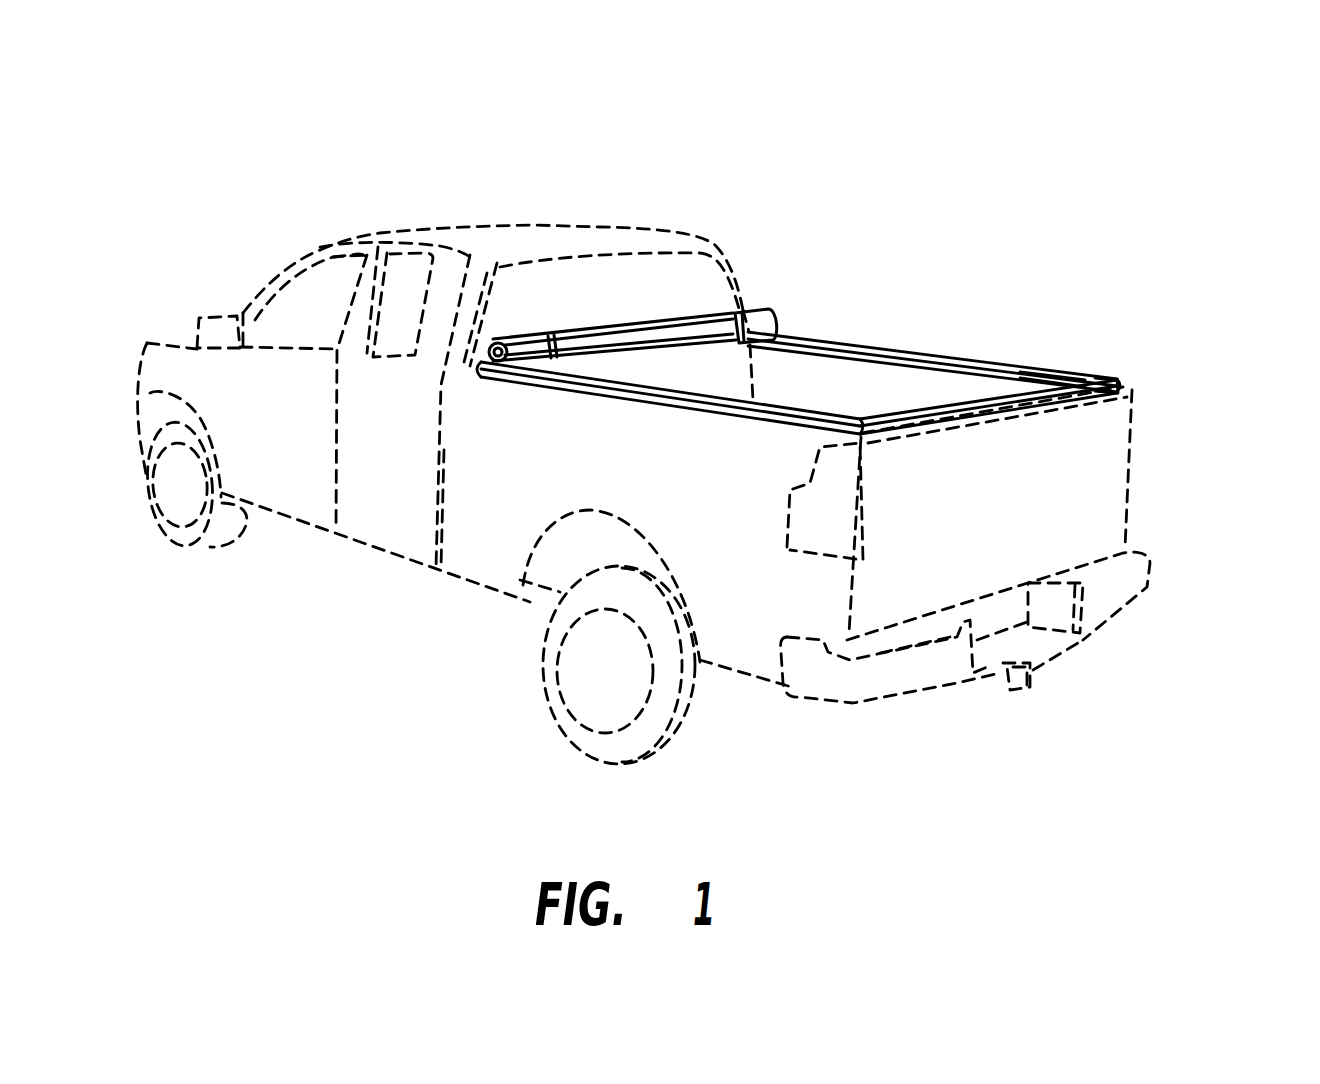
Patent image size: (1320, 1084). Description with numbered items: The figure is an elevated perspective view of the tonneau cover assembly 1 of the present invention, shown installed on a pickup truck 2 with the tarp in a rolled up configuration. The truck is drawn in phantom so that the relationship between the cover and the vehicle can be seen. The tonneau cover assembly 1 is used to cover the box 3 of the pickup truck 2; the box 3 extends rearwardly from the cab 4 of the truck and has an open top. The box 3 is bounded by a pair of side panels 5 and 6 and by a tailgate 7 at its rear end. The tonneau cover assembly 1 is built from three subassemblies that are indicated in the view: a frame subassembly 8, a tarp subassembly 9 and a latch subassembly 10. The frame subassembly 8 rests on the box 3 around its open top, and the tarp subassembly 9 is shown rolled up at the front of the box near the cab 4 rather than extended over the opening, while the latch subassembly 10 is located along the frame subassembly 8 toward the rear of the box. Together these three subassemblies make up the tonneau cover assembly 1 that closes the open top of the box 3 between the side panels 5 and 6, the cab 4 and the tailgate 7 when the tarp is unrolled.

The tonneau cover assembly 1 is at (876, 267).
The pickup truck 2 is at (681, 452).
The box 3 is at (690, 375).
The cab 4 is at (570, 233).
The side panel 5 is at (740, 617).
The side panel 6 is at (1130, 393).
The tailgate 7 is at (1107, 470).
The frame subassembly 8 is at (1118, 340).
The tarp subassembly 9 is at (773, 302).
The latch subassembly 10 is at (1083, 380).